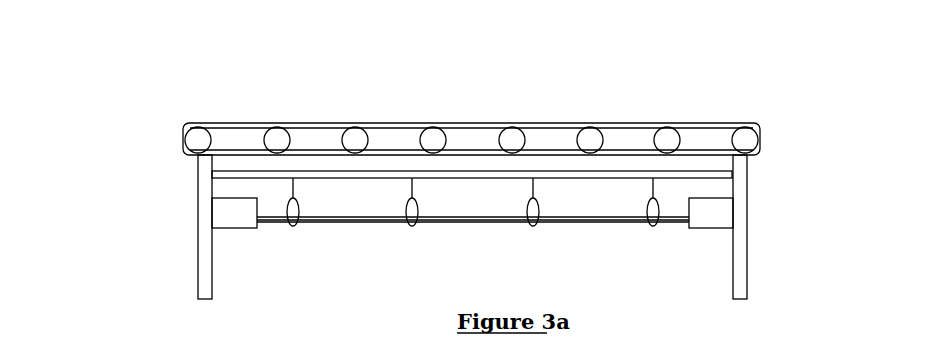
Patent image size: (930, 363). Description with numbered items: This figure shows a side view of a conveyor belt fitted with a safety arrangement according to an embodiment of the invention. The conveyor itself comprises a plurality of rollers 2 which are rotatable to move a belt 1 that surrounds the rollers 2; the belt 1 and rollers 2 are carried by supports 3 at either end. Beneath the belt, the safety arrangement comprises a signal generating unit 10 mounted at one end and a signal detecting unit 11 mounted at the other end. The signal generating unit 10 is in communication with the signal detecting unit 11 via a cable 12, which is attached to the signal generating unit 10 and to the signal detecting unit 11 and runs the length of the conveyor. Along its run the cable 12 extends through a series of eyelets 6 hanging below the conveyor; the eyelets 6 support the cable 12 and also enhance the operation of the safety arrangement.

The belt 1 is at (545, 127).
The rollers 2 is at (350, 137).
The supports 3 is at (207, 267).
The eyelets 6 is at (412, 197).
The signal generating unit 10 is at (227, 212).
The signal detecting unit 11 is at (718, 215).
The cable 12 is at (610, 216).